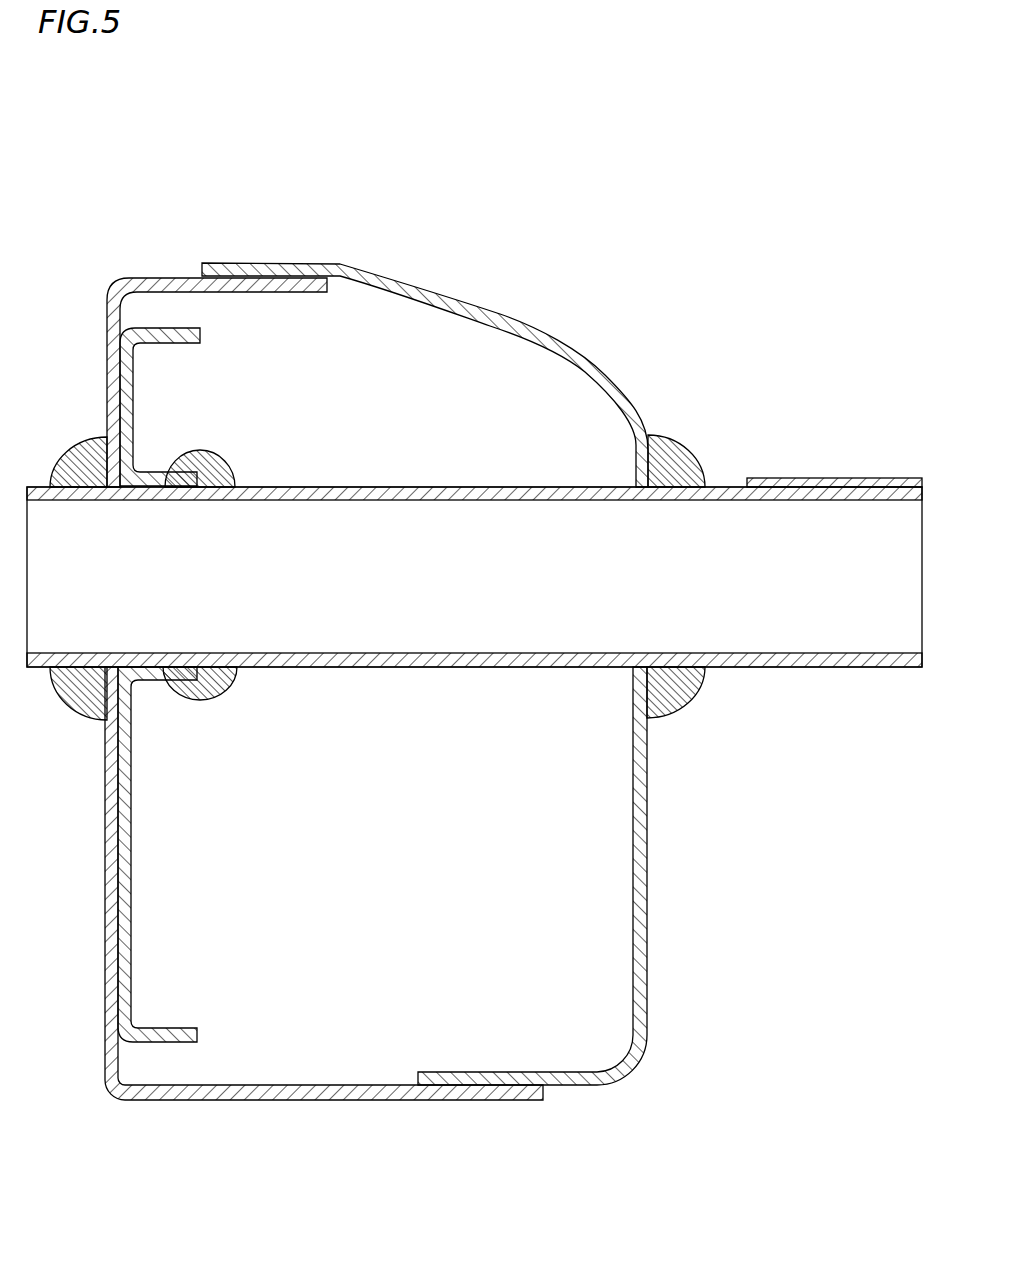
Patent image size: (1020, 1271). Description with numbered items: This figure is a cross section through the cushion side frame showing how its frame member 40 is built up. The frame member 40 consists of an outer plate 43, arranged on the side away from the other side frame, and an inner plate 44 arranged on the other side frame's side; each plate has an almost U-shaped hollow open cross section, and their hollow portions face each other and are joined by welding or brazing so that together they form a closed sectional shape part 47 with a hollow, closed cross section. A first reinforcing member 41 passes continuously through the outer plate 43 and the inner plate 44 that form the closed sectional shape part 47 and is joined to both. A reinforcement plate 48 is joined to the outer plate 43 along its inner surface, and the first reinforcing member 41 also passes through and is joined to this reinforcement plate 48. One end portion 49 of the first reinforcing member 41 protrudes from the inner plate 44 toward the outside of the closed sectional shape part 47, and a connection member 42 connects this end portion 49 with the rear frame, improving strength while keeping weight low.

The frame member 40 is at (552, 157).
The first reinforcing member 41 is at (562, 487).
The connection member 42 is at (835, 478).
The outer plate 43 is at (172, 277).
The inner plate 44 is at (497, 312).
The closed sectional shape part 47 is at (391, 780).
The reinforcement plate 48 is at (131, 935).
The end portion 49 is at (855, 668).